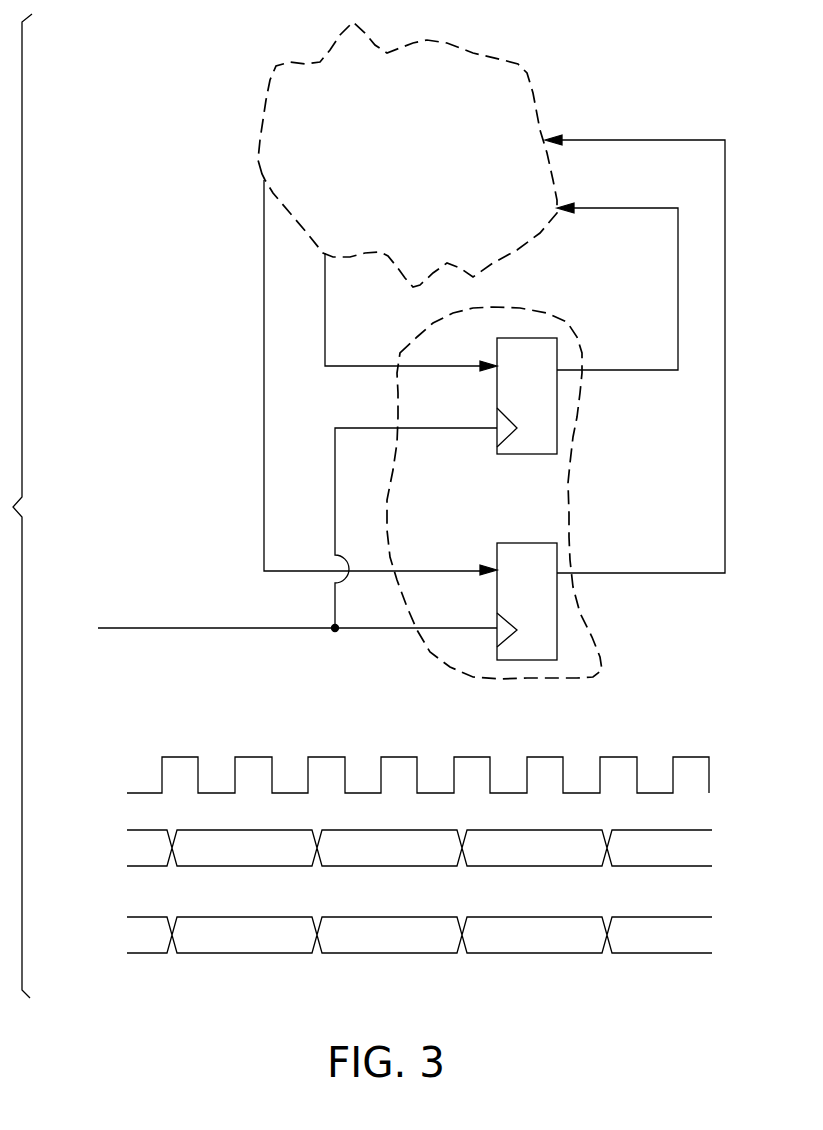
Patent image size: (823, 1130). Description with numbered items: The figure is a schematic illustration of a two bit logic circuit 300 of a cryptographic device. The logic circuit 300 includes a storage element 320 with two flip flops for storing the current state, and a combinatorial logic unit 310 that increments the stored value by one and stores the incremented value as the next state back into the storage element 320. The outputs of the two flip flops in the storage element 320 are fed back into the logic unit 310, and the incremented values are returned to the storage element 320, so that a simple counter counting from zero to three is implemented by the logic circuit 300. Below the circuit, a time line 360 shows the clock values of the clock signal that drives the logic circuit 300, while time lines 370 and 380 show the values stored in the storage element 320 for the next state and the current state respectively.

The two bit logic circuit 300 is at (635, 83).
The combinatorial logic unit 310 is at (527, 76).
The storage element 320 is at (432, 657).
The time line 360 is at (715, 768).
The time line 370 is at (715, 849).
The time line 380 is at (715, 936).